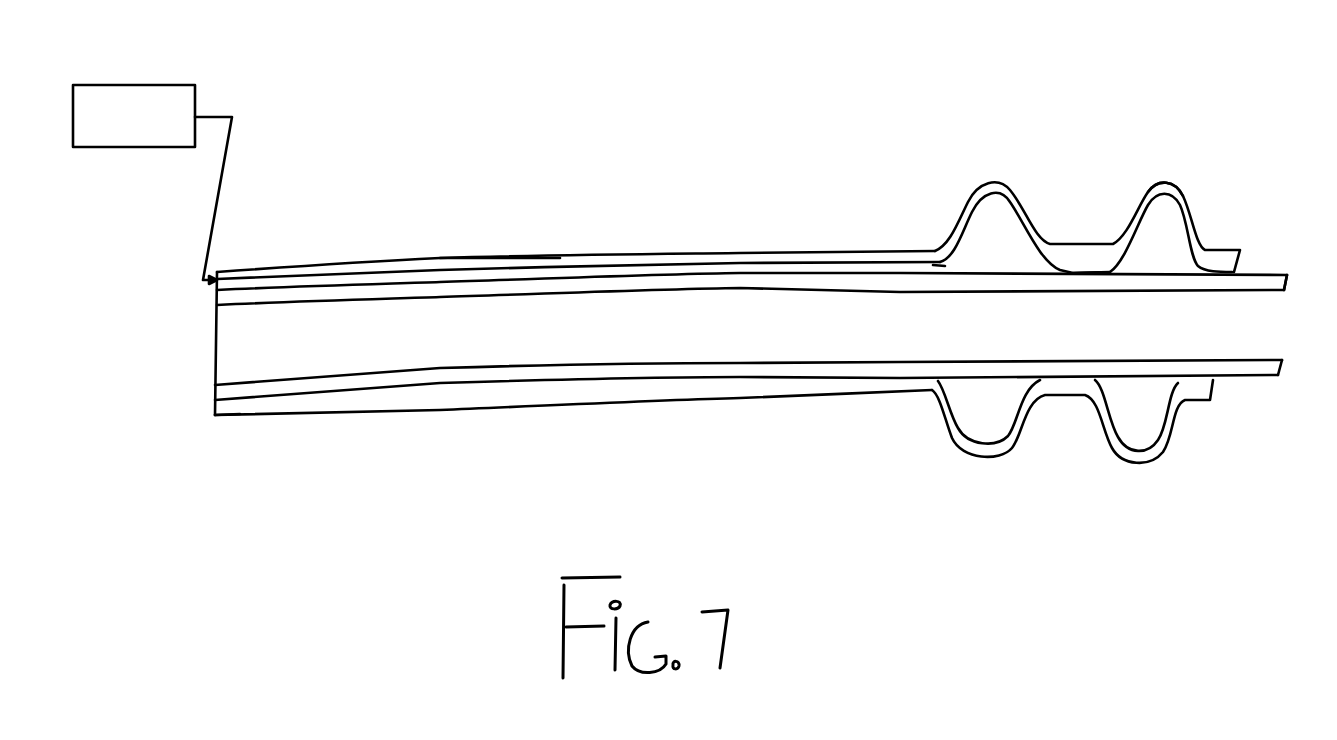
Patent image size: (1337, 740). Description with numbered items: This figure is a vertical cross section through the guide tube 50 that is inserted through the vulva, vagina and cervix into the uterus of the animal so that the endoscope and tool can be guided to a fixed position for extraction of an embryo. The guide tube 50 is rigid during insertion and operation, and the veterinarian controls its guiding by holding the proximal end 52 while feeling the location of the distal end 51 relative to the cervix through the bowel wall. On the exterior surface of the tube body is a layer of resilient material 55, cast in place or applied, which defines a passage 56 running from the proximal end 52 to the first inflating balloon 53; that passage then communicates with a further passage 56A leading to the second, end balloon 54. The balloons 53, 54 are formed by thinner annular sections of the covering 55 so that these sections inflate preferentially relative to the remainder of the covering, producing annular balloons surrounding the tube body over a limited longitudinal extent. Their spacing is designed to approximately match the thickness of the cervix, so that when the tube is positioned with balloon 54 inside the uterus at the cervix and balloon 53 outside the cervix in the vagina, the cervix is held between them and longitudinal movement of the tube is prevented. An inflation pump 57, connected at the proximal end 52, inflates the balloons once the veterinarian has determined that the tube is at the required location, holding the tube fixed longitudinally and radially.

The guide tube 50 is at (656, 252).
The distal end 51 is at (1258, 372).
The proximal end 52 is at (238, 418).
The first inflating balloon 53 is at (1040, 95).
The second inflating balloon 54 is at (1225, 100).
The layer of resilient material 55 is at (509, 258).
The passage 56 is at (277, 280).
The passage 56A is at (1082, 268).
The inflation pump 57 is at (207, 55).